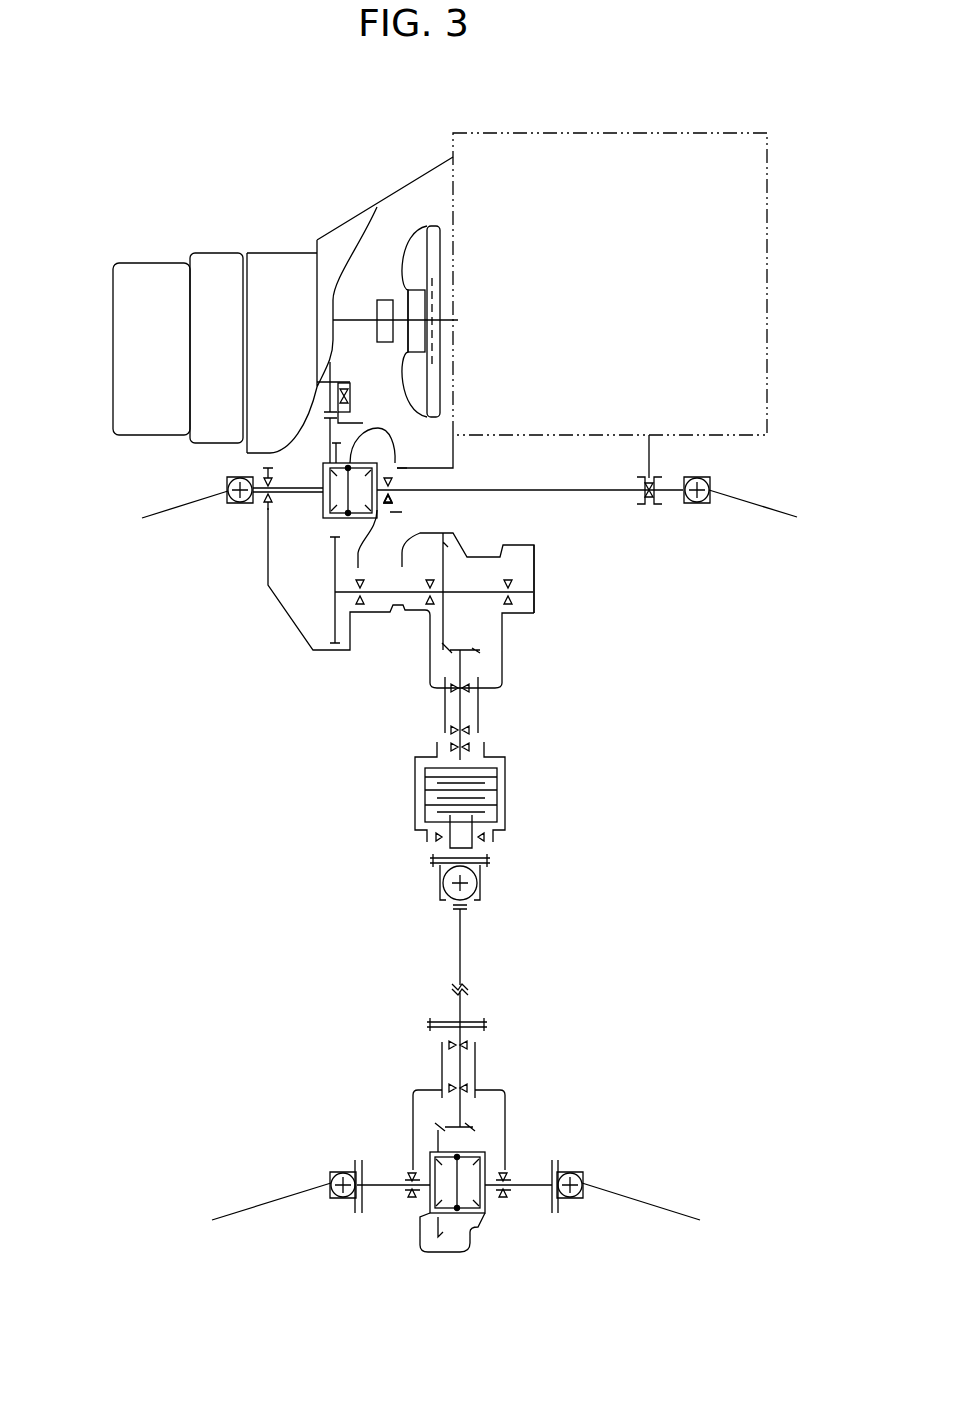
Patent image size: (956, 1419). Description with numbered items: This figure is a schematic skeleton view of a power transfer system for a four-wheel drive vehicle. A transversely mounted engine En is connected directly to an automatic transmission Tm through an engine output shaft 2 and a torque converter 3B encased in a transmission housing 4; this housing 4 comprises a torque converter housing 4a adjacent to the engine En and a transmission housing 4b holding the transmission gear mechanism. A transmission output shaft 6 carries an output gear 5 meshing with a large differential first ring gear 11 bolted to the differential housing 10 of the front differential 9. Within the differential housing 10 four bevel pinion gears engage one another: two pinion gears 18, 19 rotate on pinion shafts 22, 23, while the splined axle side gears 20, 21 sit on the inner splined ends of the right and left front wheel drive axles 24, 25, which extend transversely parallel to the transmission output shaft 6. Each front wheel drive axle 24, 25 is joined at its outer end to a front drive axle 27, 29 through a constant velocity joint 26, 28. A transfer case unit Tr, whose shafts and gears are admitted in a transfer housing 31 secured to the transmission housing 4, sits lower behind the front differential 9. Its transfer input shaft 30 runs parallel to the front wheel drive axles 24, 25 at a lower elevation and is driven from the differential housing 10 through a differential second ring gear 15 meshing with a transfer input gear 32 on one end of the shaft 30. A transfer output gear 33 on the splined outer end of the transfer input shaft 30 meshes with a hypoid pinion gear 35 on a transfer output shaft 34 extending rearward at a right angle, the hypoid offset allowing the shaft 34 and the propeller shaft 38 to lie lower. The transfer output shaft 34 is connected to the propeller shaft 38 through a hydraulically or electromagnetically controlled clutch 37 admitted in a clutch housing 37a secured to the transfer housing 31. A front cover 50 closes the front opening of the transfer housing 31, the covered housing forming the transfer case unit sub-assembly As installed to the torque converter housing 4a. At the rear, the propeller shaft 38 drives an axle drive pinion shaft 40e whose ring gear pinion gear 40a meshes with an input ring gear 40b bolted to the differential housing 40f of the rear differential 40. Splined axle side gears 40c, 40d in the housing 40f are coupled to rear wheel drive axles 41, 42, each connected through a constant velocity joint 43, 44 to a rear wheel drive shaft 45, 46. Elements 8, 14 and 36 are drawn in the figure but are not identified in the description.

The automatic transmission Tm is at (217, 248).
The transmission housing 4 is at (321, 302).
The torque converter housing 4a is at (331, 236).
The transmission housing 4b is at (265, 253).
The output gear 5 is at (367, 320).
The torque converter 3B is at (441, 238).
The engine output shaft 2 is at (456, 315).
The engine En is at (600, 131).
The transmission output shaft 6 is at (318, 408).
The clutch 8 is at (338, 384).
The front differential 9 is at (328, 463).
The differential housing 10 is at (352, 448).
The bevel pinion gear 18 is at (393, 462).
The splined axle side gear 21 is at (391, 477).
The pinion shaft 22 is at (394, 498).
The pinion shaft 23 is at (437, 510).
The splined axle side gear 20 is at (324, 509).
The constant velocity joint 26 is at (229, 503).
The front wheel drive axle 24 is at (266, 508).
The universal joint 14 is at (225, 477).
The front drive axle 27 is at (152, 508).
The front wheel drive axle 25 is at (560, 495).
The constant velocity joint 28 is at (707, 481).
The front drive axle 29 is at (760, 500).
The differential second ring gear 15 is at (333, 538).
The bevel pinion gear 19 is at (360, 520).
The differential first ring gear 11 is at (401, 598).
The front cover 50 is at (462, 537).
The transfer input shaft 30 is at (490, 592).
The transfer input gear 32 is at (331, 610).
The transfer output gear 33 is at (440, 615).
The hypoid pinion gear 35 is at (448, 656).
The transfer housing 31 is at (505, 680).
The transfer output shaft 34 is at (447, 712).
The transfer case unit Tr is at (380, 660).
The transfer case unit sub-assembly As is at (518, 627).
The clutch 37 is at (409, 808).
The clutch housing 37a is at (505, 790).
The universal joint 36 is at (478, 883).
The propeller shaft 38 is at (460, 958).
The rear differential 40 is at (452, 1153).
The axle drive pinion shaft 40e is at (460, 1073).
The ring gear pinion gear 40a is at (466, 1124).
The input ring gear 40b is at (438, 1140).
The differential housing 40f is at (490, 1165).
The splined axle side gear 40c is at (431, 1201).
The splined axle side gear 40d is at (488, 1202).
The rear wheel drive axle 41 is at (382, 1185).
The rear wheel drive axle 42 is at (533, 1195).
The constant velocity joint 43 is at (340, 1200).
The constant velocity joint 44 is at (578, 1200).
The rear wheel drive shaft 45 is at (278, 1203).
The rear wheel drive shaft 46 is at (640, 1205).